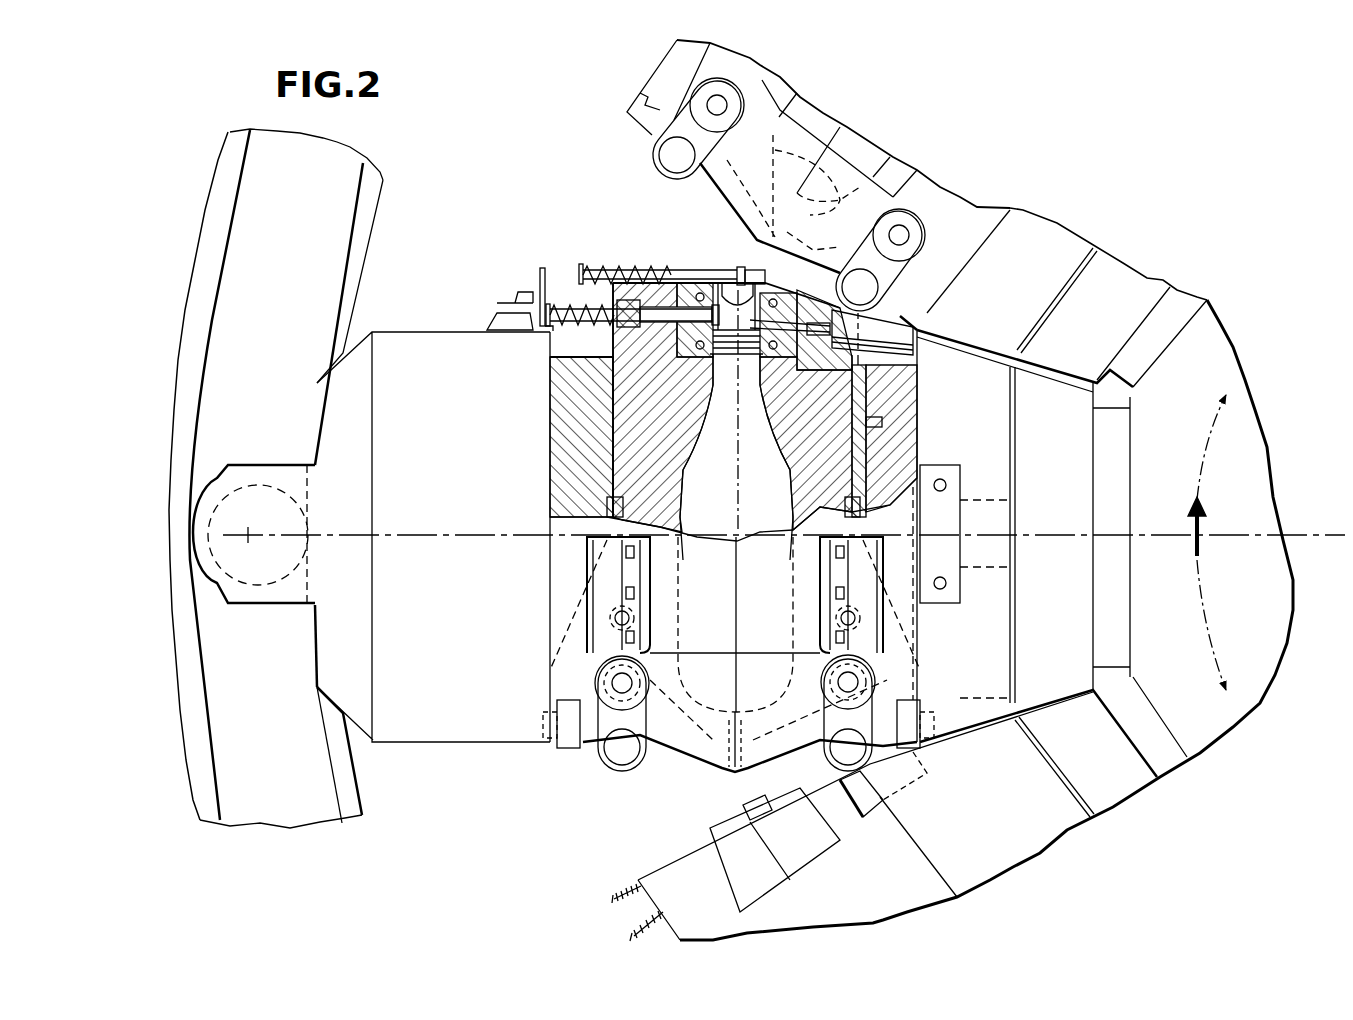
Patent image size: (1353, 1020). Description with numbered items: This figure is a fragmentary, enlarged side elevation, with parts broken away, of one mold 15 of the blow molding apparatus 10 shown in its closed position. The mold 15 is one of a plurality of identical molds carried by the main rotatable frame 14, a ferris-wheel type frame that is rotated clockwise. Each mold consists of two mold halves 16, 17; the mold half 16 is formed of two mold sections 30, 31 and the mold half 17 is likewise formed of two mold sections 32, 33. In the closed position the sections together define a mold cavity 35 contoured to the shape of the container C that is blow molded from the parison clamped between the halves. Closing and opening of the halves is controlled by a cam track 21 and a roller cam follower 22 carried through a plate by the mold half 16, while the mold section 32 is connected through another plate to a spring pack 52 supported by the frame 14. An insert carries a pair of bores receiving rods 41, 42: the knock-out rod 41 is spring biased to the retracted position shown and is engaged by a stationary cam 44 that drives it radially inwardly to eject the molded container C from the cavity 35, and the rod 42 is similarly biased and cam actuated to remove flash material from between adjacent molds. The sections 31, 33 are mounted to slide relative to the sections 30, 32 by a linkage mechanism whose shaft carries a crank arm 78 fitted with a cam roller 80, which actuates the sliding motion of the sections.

The blow molding apparatus 10 is at (538, 188).
The main rotatable frame 14 is at (1203, 350).
The mold 15 is at (567, 452).
The mold half 16 is at (615, 400).
The mold half 17 is at (830, 397).
The cam track 21 is at (237, 330).
The roller cam follower 22 is at (205, 500).
The mold section 30 is at (662, 410).
The mold section 31 is at (668, 663).
The mold section 32 is at (837, 504).
The mold section 33 is at (770, 668).
The mold cavity 35 is at (778, 440).
The knock-out rod 41 is at (560, 275).
The rod 42 is at (590, 268).
The stationary cam 44 is at (510, 300).
The spring pack 52 is at (987, 644).
The crank arm 78 is at (667, 153).
The cam roller 80 is at (708, 85).
The container C is at (719, 496).